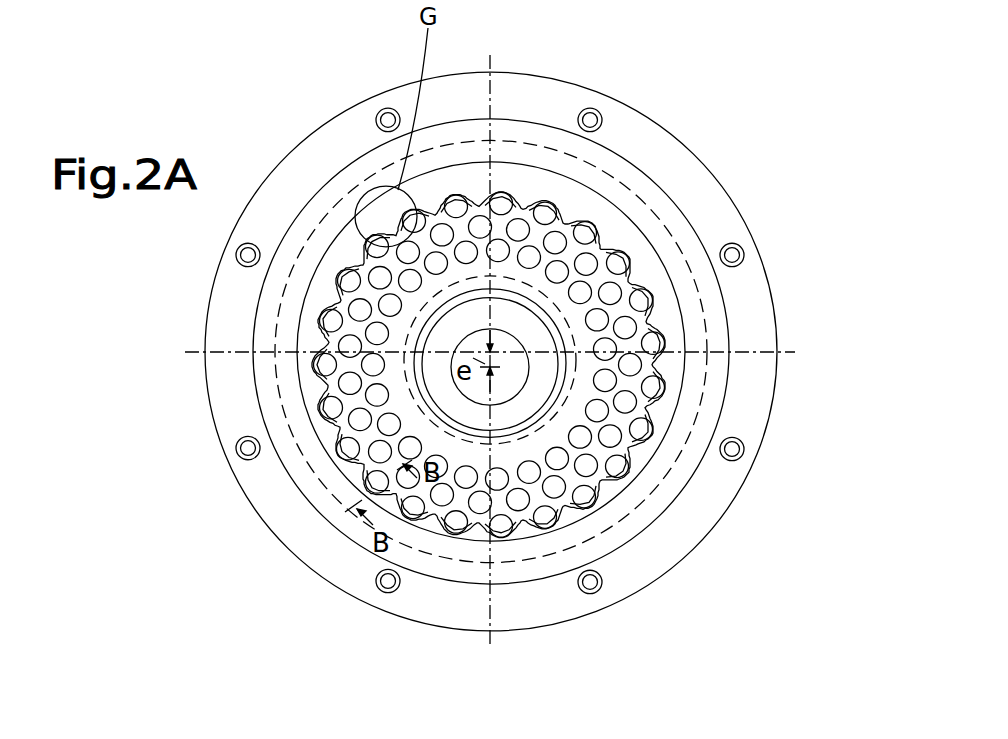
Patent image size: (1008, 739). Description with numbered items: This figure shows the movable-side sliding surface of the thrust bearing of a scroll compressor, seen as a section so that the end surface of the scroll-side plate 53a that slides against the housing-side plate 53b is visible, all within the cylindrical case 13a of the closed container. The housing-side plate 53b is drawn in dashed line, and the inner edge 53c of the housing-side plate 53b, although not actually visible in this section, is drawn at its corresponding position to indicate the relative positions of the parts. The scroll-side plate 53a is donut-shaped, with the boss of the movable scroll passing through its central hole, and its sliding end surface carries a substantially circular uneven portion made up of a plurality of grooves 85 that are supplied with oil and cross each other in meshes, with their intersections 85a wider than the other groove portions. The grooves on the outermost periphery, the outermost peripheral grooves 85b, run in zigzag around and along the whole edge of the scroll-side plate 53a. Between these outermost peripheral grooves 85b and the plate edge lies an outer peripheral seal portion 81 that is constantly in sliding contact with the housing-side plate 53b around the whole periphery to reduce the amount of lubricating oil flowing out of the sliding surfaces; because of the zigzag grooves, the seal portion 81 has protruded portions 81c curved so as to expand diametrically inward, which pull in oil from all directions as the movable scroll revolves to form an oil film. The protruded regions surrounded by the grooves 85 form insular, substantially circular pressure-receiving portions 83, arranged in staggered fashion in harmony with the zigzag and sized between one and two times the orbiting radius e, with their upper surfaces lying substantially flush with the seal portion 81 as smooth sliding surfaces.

The cylindrical case 13a is at (738, 490).
The scroll-side plate 53a is at (687, 385).
The housing-side plate 53b is at (703, 303).
The inner edge of the housing-side plate 53c is at (642, 323).
The outer peripheral seal portion 81 is at (308, 410).
The protruded portion 81c is at (385, 228).
The pressure-receiving portions 83 is at (633, 303).
The grooves 85 is at (384, 471).
The intersections 85a is at (540, 494).
The outermost peripheral grooves 85b is at (458, 500).